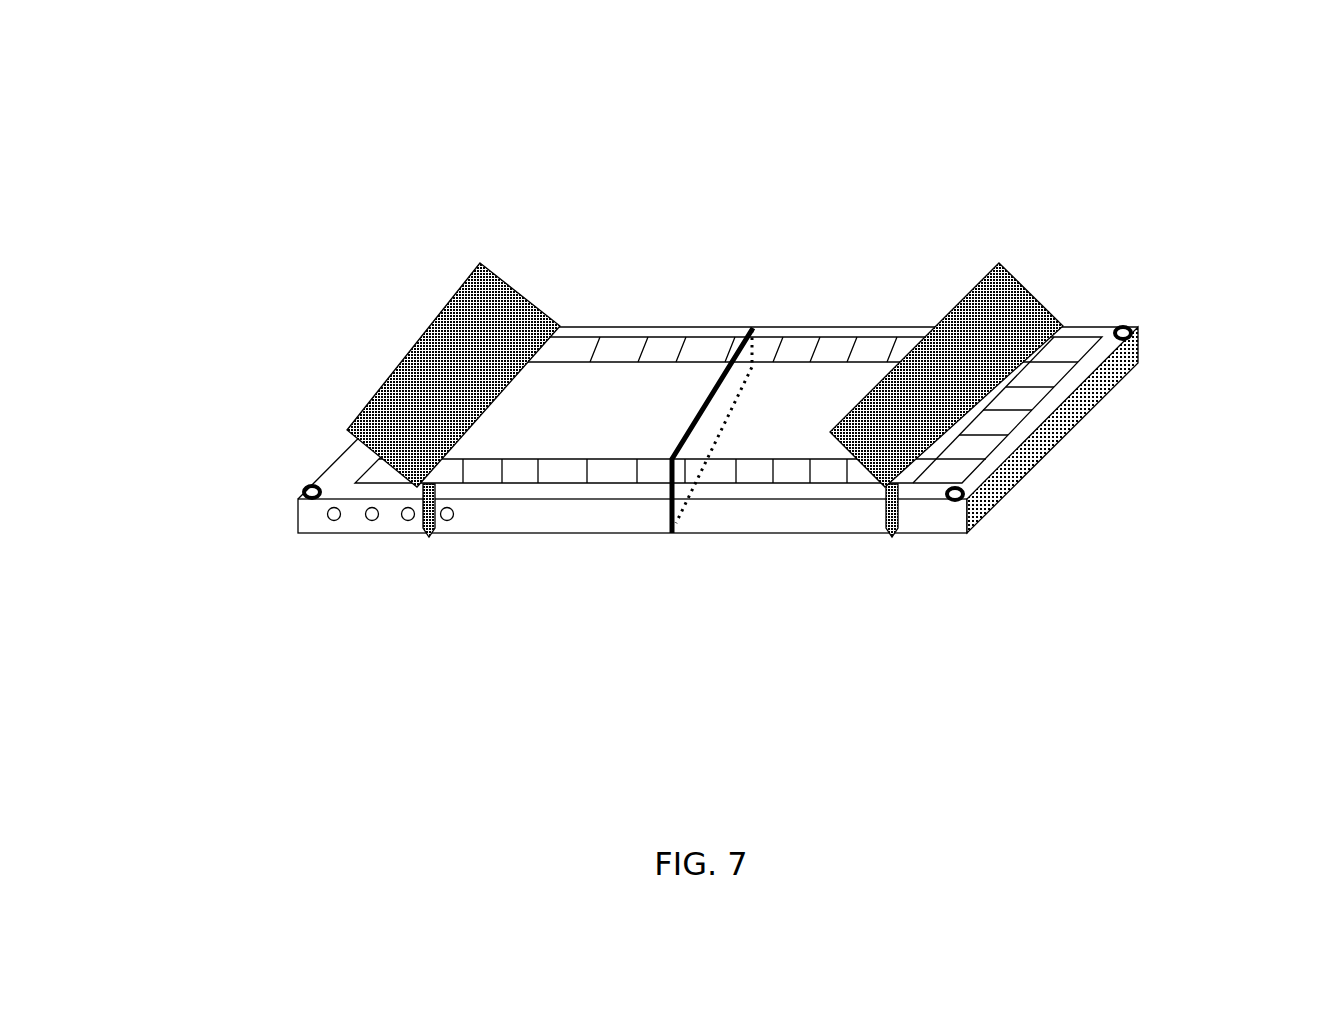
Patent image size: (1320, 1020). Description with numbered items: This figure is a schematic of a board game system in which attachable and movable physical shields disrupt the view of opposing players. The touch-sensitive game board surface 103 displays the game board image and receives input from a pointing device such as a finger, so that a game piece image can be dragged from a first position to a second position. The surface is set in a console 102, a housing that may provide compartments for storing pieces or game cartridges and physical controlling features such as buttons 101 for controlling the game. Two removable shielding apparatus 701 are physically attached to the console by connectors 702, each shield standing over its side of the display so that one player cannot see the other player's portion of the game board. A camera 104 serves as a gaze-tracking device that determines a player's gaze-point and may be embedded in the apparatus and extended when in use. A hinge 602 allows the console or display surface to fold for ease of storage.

The buttons 101 is at (333, 521).
The console 102 is at (1138, 337).
The touch-sensitive game board surface 103 is at (805, 325).
The camera 104 is at (1242, 135).
The hinge 602 is at (669, 533).
The removable shielding apparatus 701 is at (520, 290).
The connector 702 is at (430, 535).